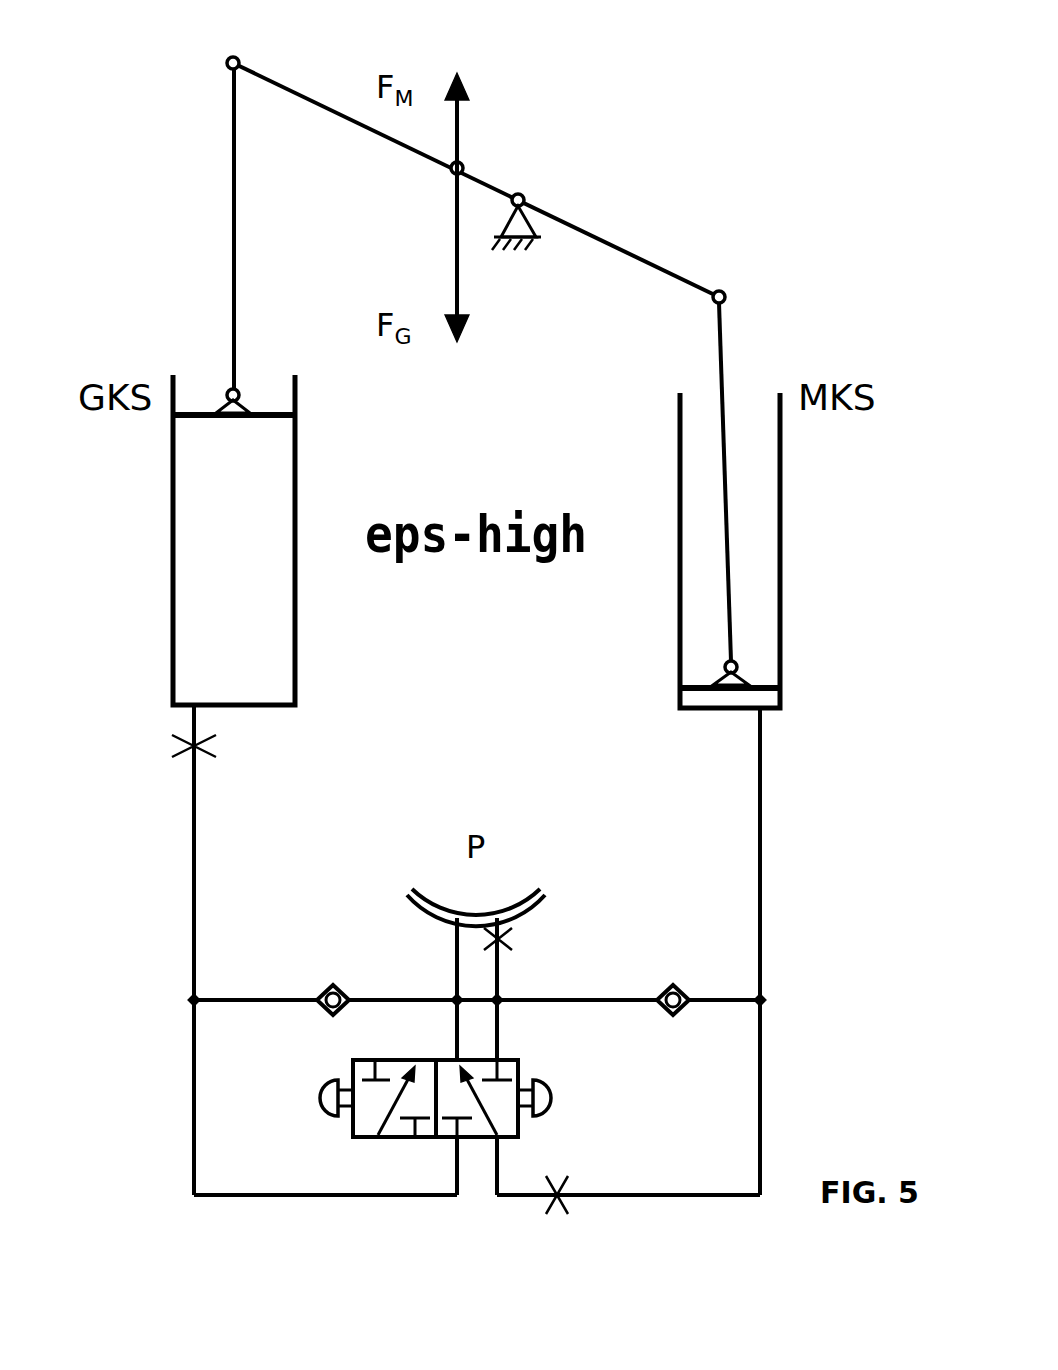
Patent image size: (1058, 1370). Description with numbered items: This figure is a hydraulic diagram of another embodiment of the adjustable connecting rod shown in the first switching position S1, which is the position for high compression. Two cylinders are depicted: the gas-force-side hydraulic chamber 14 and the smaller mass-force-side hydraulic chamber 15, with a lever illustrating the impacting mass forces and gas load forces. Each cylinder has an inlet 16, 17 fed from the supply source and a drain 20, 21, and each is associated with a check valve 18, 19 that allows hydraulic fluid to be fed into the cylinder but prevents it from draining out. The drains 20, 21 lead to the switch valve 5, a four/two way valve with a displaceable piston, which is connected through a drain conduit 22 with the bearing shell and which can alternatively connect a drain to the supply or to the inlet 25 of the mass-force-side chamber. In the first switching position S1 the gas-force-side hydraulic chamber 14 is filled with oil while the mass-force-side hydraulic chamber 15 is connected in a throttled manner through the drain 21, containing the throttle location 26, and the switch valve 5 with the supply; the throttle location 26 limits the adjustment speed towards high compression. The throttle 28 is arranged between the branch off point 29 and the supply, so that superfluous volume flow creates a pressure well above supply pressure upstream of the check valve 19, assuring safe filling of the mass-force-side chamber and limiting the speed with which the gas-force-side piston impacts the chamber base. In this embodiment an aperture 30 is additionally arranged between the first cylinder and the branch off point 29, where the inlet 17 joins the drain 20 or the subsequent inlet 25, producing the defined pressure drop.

The first switching position S1 is at (763, 119).
The GKS hydraulic chamber 14 is at (222, 546).
The MKS hydraulic chamber 15 is at (752, 593).
The inlet of the first cylinder 16 is at (237, 995).
The inlet of the second cylinder 17 is at (733, 995).
The check valve 18 is at (333, 986).
The check valve 19 is at (673, 988).
The drain of the first cylinder 20 is at (192, 1082).
The drain of the second cylinder 21 is at (763, 1045).
The drain conduit 22 is at (455, 1022).
The inlet of the MKS hydraulic chamber 25 is at (500, 1040).
The throttle location 26 is at (568, 1184).
The throttle 28 is at (516, 935).
The branch off point 29 is at (512, 997).
The aperture 30 is at (182, 752).
The switch valve 5 is at (332, 1125).